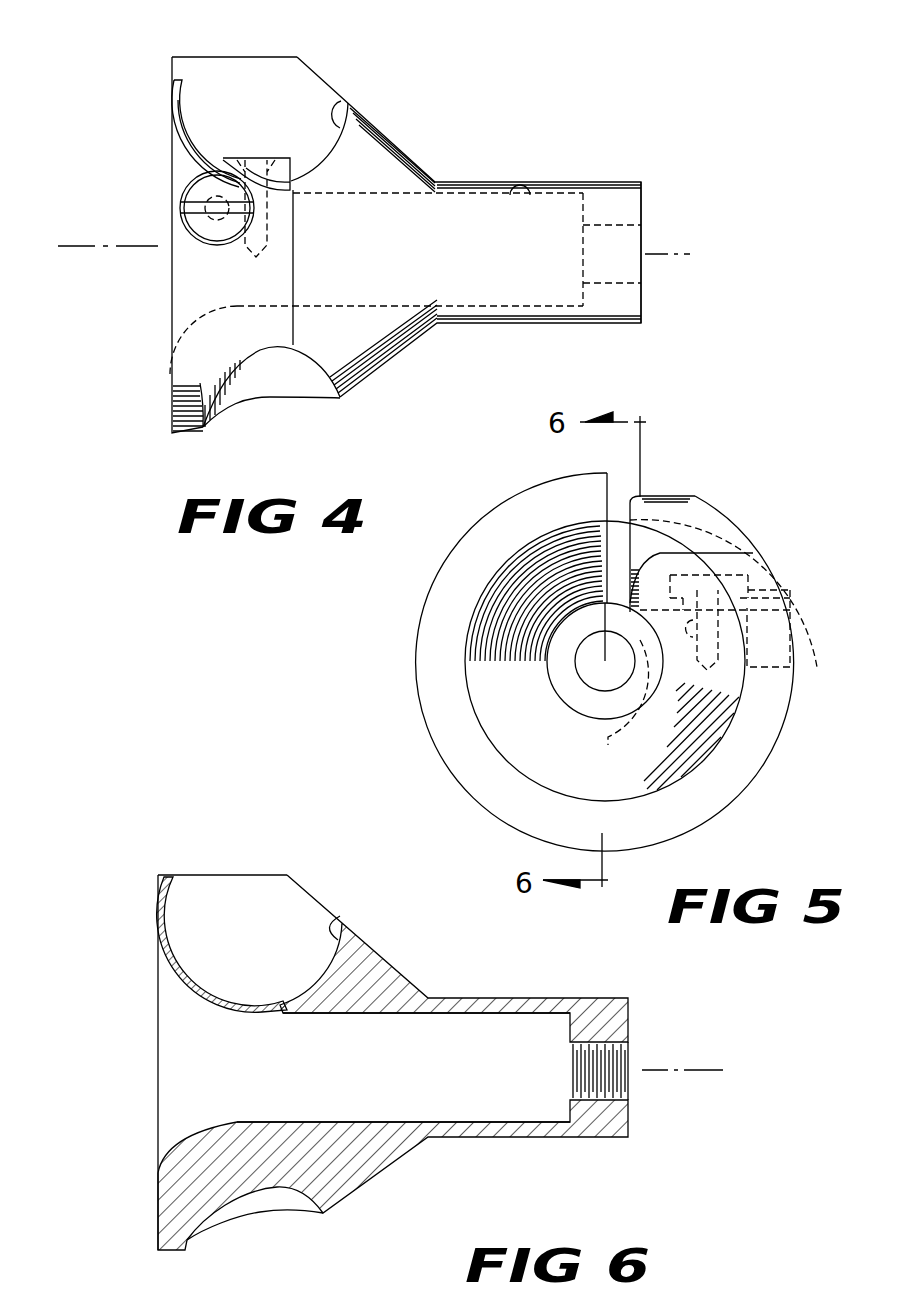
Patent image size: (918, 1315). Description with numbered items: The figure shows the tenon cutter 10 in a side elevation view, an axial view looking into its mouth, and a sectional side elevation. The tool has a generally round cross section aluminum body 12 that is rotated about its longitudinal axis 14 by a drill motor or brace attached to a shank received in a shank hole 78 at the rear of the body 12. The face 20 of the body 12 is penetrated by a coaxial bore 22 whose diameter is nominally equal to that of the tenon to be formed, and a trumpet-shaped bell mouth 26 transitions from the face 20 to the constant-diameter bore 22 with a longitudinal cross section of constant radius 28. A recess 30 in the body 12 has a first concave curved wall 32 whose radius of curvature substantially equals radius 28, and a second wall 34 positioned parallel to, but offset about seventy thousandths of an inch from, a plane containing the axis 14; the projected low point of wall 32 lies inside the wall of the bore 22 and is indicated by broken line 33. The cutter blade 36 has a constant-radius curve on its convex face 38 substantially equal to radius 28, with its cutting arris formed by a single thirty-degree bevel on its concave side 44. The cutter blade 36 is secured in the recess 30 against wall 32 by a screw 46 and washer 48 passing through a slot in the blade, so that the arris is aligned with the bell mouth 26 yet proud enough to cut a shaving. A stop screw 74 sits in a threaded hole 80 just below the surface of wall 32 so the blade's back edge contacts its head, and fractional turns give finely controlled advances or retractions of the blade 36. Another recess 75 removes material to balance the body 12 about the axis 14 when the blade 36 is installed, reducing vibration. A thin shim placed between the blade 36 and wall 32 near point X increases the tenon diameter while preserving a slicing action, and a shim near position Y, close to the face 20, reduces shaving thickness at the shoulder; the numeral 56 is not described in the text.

In FIG. 4, the tenon cutter 10 is at (530, 76).
In FIG. 5, the tenon cutter 10 is at (502, 495).
In FIG. 6, the tenon cutter 10 is at (513, 978).
In FIG. 4, the body 12 is at (403, 143).
In FIG. 5, the body 12 is at (423, 712).
In FIG. 6, the body 12 is at (380, 1173).
In FIG. 4, the longitudinal axis 14 is at (117, 244).
In FIG. 6, the longitudinal axis 14 is at (668, 1068).
In FIG. 4, the face 20 is at (172, 72).
In FIG. 5, the face 20 is at (482, 787).
In FIG. 6, the face 20 is at (158, 1220).
In FIG. 4, the bore 22 is at (530, 182).
In FIG. 5, the bore 22 is at (580, 703).
In FIG. 6, the bore 22 is at (410, 1013).
In FIG. 6, the bell mouth 26 is at (174, 1080).
In FIG. 4, the radius 28 is at (186, 331).
In FIG. 6, the radius 28 is at (195, 990).
In FIG. 4, the recess 30 is at (275, 85).
In FIG. 6, the recess 30 is at (291, 894).
In FIG. 4, the first concave curved wall 32 is at (333, 102).
In FIG. 5, the first concave curved wall 32 is at (620, 553).
In FIG. 6, the first concave curved wall 32 is at (333, 922).
In FIG. 5, the broken line 33 is at (625, 703).
In FIG. 4, the second wall 34 is at (217, 85).
In FIG. 5, the second wall 34 is at (618, 490).
In FIG. 6, the second wall 34 is at (233, 888).
In FIG. 4, the cutter blade 36 is at (168, 118).
In FIG. 5, the cutter blade 36 is at (670, 492).
In FIG. 6, the cutter blade 36 is at (168, 876).
In FIG. 4, the convex face 38 is at (173, 143).
In FIG. 6, the convex face 38 is at (160, 925).
In FIG. 4, the concave side 44 is at (183, 128).
In FIG. 6, the concave side 44 is at (178, 950).
In FIG. 4, the screw 46 is at (267, 160).
In FIG. 5, the screw 46 is at (733, 590).
In FIG. 4, the washer 48 is at (223, 157).
In FIG. 5, the washer 48 is at (755, 548).
In FIG. 4, the bottom face 56 is at (178, 437).
In FIG. 6, the bottom face 56 is at (160, 1253).
In FIG. 4, the stop screw 74 is at (222, 232).
In FIG. 5, the stop screw 74 is at (793, 653).
In FIG. 4, the recess 75 is at (287, 383).
In FIG. 6, the recess 75 is at (273, 1197).
In FIG. 4, the shank hole 78 is at (673, 256).
In FIG. 6, the shank hole 78 is at (627, 1083).
In FIG. 4, the threaded hole 80 is at (207, 187).
In FIG. 5, the threaded hole 80 is at (730, 673).
In FIG. 6, the point X is at (258, 1013).
In FIG. 6, the position Y is at (163, 970).